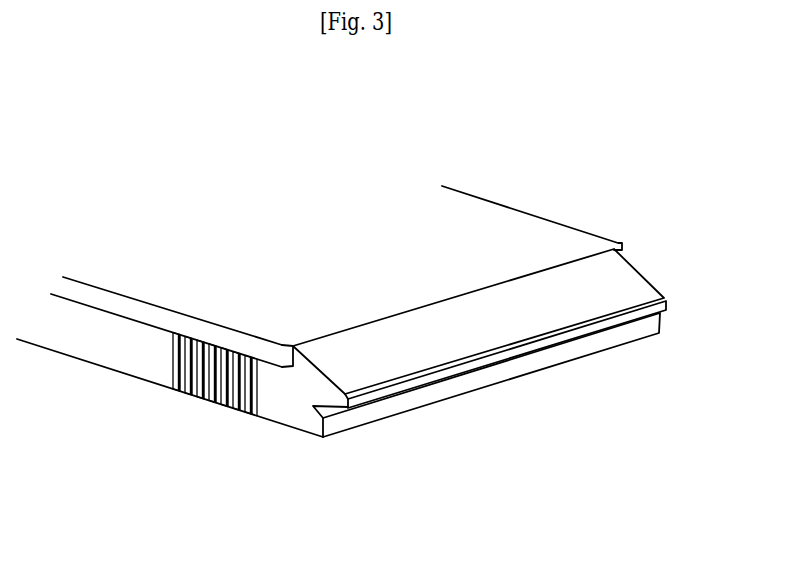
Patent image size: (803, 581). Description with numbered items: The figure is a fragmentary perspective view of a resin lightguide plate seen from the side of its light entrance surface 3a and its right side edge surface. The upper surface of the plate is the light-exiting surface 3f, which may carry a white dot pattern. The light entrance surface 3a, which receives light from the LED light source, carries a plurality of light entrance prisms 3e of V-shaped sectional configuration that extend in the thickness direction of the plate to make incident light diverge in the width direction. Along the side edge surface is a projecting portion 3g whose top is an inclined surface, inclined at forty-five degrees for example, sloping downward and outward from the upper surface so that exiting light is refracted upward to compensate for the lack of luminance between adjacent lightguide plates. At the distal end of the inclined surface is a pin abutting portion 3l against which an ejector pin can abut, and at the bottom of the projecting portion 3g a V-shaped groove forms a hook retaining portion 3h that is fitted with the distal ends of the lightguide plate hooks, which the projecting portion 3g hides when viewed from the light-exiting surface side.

The light entrance surface 3a is at (100, 347).
The light entrance prisms 3e is at (213, 377).
The light-exiting surface 3f is at (368, 272).
The projecting portion 3g is at (452, 337).
The hook retaining portion 3h is at (337, 410).
The pin abutting portion 3l is at (613, 312).